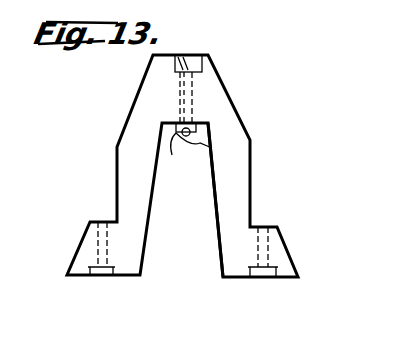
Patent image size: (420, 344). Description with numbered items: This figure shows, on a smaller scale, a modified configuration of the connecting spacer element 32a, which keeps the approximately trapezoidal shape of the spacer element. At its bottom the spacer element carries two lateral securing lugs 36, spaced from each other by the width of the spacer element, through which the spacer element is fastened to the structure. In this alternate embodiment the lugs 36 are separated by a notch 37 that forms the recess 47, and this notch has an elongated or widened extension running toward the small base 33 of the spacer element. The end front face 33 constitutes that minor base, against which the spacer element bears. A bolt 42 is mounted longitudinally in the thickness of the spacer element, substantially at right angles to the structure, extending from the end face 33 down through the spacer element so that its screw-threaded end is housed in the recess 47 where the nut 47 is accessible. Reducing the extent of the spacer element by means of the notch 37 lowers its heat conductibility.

The connecting spacer element 32a is at (118, 179).
The end front face 33 is at (208, 58).
The bolt 42 is at (206, 145).
The nut 47 is at (175, 171).
The notch 37 is at (210, 207).
The lateral securing lugs 36 is at (82, 250).